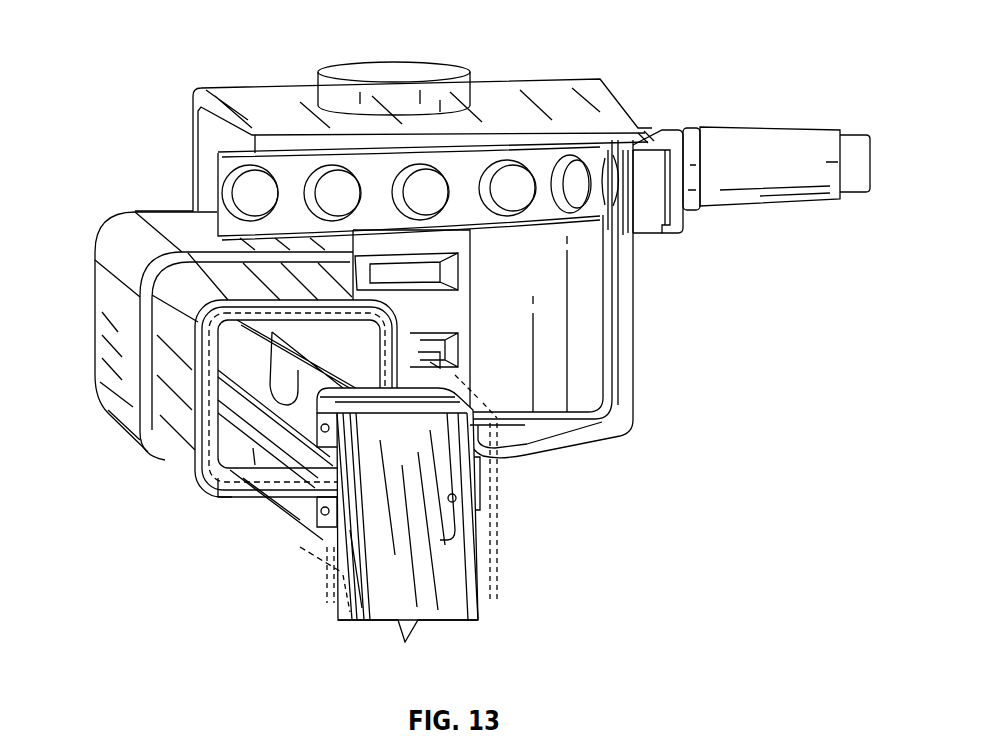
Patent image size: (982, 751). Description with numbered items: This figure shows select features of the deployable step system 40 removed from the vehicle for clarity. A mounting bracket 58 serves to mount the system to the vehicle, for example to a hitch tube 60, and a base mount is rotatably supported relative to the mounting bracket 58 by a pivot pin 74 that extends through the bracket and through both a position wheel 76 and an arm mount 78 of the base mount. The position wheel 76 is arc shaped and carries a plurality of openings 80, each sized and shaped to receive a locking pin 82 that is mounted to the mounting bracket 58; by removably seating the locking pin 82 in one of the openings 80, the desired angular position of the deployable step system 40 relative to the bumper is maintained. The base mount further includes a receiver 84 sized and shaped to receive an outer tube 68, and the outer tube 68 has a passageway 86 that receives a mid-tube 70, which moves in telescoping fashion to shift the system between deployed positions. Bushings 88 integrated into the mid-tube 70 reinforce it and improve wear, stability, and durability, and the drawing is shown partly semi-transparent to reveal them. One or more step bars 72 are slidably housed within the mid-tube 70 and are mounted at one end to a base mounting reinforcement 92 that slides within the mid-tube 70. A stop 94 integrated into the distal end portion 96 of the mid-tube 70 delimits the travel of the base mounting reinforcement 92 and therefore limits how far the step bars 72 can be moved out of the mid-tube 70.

The deployable step system 40 is at (653, 44).
The mounting bracket 58 is at (585, 360).
The hitch tube 60 is at (106, 426).
The outer tube 68 is at (173, 443).
The mid-tube 70 is at (299, 545).
The step bars 72 is at (450, 612).
The pivot pin 74 is at (395, 68).
The position wheel 76 is at (597, 160).
The arm mount 78 is at (453, 307).
The openings 80 is at (320, 182).
The locking pin 82 is at (757, 137).
The receiver 84 is at (112, 313).
The passageway 86 is at (220, 495).
The bushings 88 is at (367, 373).
The base mounting reinforcement 92 is at (446, 384).
The stop 94 is at (343, 592).
The distal end portion 96 is at (507, 434).